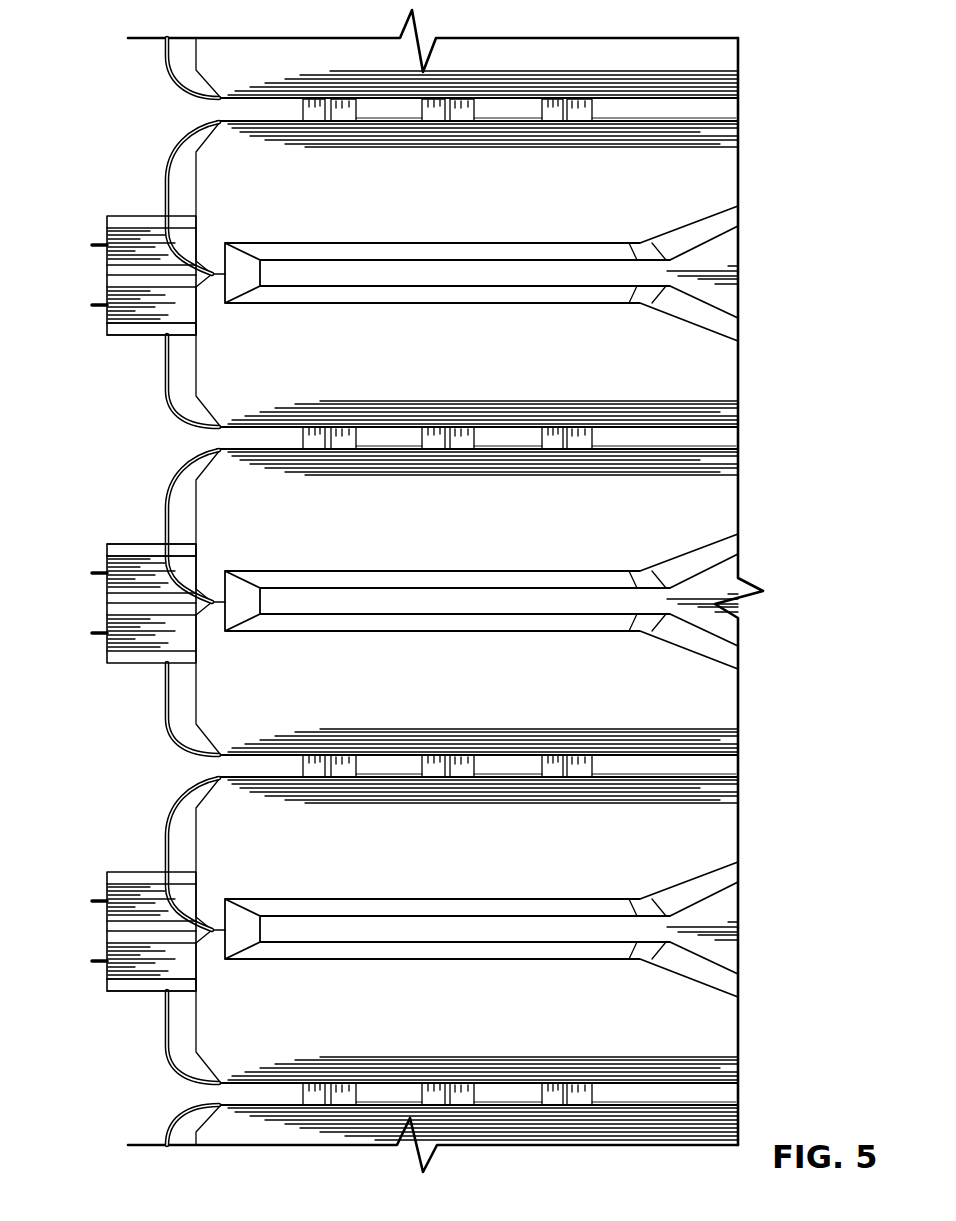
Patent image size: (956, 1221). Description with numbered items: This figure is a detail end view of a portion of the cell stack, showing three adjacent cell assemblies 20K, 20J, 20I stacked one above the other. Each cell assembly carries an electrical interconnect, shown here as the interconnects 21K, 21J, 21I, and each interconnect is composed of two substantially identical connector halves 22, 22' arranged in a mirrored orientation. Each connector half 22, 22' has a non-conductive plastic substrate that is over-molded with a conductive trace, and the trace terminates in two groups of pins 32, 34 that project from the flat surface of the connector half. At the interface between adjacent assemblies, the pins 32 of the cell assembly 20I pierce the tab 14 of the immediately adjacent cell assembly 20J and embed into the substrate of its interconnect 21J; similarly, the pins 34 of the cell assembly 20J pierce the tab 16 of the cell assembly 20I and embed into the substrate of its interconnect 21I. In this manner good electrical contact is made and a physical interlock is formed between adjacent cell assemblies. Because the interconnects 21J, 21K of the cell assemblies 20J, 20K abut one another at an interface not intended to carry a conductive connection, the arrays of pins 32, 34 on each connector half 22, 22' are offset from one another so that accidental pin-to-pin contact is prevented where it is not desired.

The tab 14 is at (196, 93).
The tab 16 is at (168, 158).
The cell assembly 20K is at (92, 258).
The cell assembly 20J is at (84, 605).
The cell assembly 20I is at (82, 890).
The interconnect 21K is at (161, 340).
The interconnect 21J is at (141, 533).
The interconnect 21I is at (152, 998).
The connector half 22 is at (467, 633).
The connector half 22' is at (467, 560).
The pins 32 is at (347, 1090).
The pins 34 is at (533, 602).